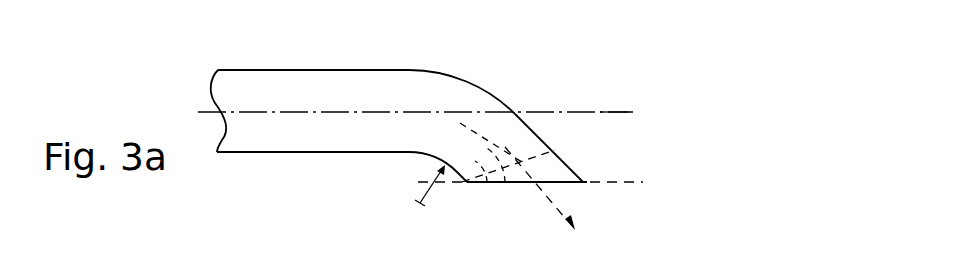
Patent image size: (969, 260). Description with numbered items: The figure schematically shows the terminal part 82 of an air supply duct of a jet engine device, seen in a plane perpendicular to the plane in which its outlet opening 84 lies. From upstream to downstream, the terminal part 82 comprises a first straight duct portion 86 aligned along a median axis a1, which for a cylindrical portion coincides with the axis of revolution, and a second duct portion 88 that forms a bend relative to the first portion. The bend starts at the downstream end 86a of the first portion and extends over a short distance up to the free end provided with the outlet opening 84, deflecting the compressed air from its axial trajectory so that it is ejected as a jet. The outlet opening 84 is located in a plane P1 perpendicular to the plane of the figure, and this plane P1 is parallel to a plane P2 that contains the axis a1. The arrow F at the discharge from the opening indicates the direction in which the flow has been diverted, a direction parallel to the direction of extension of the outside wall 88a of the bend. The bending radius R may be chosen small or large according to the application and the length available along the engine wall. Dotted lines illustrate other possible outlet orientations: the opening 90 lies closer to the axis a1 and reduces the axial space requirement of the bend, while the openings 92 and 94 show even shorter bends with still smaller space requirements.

The terminal part 82 is at (233, 70).
The first straight duct portion 86 is at (295, 70).
The downstream end of the first portion 86a is at (382, 152).
The second duct portion 88 is at (463, 78).
The outside wall of the bend 88a is at (548, 147).
The outlet opening 84 is at (578, 184).
The opening 90 is at (538, 157).
The opening 92 is at (520, 147).
The opening 94 is at (508, 128).
The median axis a1 is at (333, 111).
The plane P1 is at (643, 182).
The plane P2 is at (633, 112).
The bending radius R is at (430, 185).
The arrow F is at (562, 210).